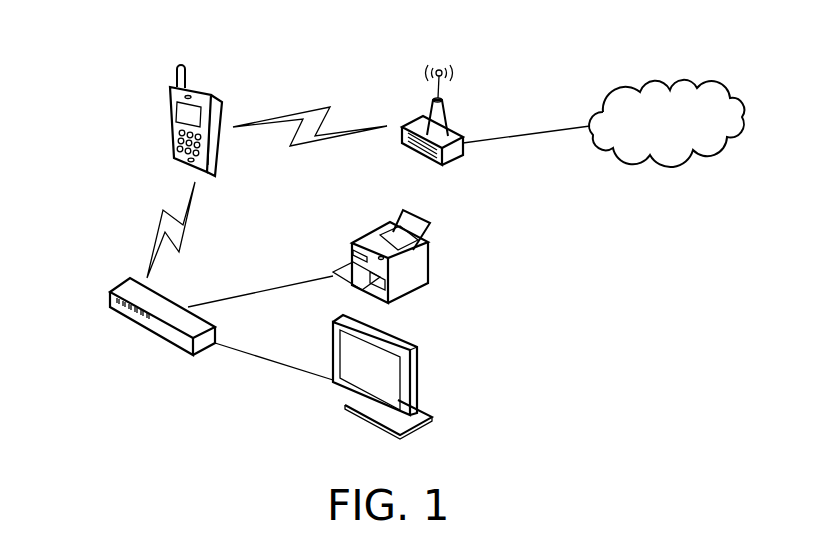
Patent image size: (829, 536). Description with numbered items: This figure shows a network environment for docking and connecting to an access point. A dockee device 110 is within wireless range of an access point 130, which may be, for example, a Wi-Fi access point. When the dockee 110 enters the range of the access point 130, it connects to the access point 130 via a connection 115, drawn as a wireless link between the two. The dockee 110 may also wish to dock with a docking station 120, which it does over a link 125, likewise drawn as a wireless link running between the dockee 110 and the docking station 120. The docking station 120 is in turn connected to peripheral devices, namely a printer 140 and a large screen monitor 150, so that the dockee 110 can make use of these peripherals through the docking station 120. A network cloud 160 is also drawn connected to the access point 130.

The dockee device 110 is at (170, 72).
The wireless communication link between dockee device and access point 115 is at (317, 102).
The docking station 120 is at (112, 285).
The wireless docking link between dockee device and docking station 125 is at (158, 220).
The access point 130 is at (425, 72).
The printer 140 is at (432, 258).
The monitor 150 is at (417, 343).
The network (cloud) 160 is at (650, 83).